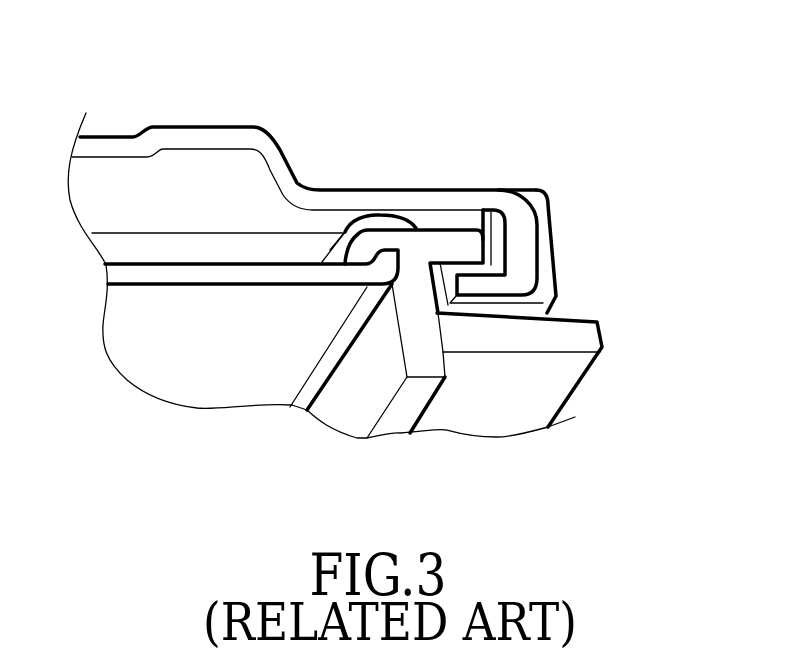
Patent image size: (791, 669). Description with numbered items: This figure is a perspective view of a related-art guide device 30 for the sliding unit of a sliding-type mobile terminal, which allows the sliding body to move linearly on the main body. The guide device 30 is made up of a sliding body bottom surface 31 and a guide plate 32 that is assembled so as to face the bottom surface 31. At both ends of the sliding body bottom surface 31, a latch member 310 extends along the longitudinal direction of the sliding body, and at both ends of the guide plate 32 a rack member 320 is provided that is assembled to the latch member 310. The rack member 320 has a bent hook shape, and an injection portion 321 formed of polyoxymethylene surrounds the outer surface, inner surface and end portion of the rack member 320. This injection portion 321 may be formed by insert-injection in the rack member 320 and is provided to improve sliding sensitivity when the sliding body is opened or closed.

The guide device 30 is at (440, 51).
The sliding body bottom surface 31 is at (197, 270).
The guide plate 32 is at (280, 172).
The latch member 310 is at (485, 318).
The rack member 320 is at (522, 257).
The injection portion 321 is at (500, 237).